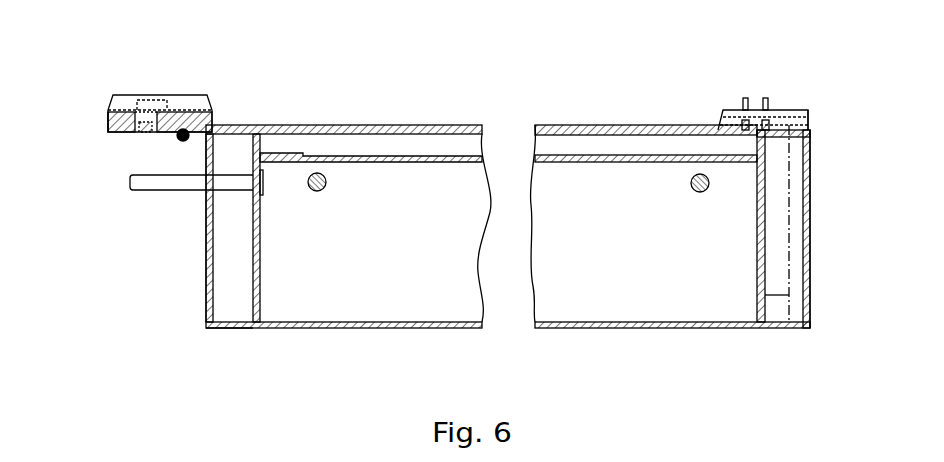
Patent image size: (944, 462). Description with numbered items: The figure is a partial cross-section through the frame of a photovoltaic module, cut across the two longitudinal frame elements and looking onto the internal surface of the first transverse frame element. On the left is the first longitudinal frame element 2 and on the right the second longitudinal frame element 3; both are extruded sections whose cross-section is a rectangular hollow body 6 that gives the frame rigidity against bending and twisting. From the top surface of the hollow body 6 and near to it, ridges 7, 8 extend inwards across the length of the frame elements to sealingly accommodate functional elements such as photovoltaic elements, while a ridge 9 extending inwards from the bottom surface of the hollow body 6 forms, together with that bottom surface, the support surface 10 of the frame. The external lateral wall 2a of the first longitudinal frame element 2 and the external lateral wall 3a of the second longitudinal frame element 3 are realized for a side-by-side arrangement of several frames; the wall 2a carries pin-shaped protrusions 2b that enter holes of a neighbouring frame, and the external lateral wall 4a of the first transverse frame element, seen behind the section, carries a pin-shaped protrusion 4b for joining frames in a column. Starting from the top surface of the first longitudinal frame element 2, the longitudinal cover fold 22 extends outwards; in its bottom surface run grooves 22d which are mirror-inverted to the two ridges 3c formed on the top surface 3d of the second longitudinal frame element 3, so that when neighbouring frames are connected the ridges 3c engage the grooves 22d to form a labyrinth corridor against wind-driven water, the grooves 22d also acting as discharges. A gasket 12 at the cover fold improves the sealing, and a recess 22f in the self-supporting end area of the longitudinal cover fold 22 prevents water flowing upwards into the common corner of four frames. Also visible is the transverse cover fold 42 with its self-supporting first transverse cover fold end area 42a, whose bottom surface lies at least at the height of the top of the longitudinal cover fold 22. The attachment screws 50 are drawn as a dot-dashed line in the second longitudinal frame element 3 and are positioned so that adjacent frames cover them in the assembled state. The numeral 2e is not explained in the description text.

The first longitudinal frame element 2 is at (207, 223).
The external lateral wall 2a is at (207, 270).
The protrusions 2b is at (146, 185).
The bottom wall 2e is at (232, 327).
The second longitudinal frame element 3 is at (807, 233).
The external lateral wall 3a is at (810, 155).
The ridges 3c is at (766, 98).
The top surface 3d is at (795, 130).
The external lateral wall 4a is at (400, 267).
The protrusion 4b is at (316, 192).
The hollow body 6 is at (792, 183).
The ridge 7 is at (281, 125).
The ridge 8 is at (297, 155).
The ridge 9 is at (283, 321).
The support surface 10 is at (328, 334).
The gasket 12 is at (185, 130).
The longitudinal cover fold 22 is at (207, 120).
The grooves 22d is at (157, 128).
The recess 22f is at (110, 128).
The transverse cover fold 42 is at (722, 110).
The first transverse cover fold end area 42a is at (780, 112).
The attachment screws 50 is at (788, 295).